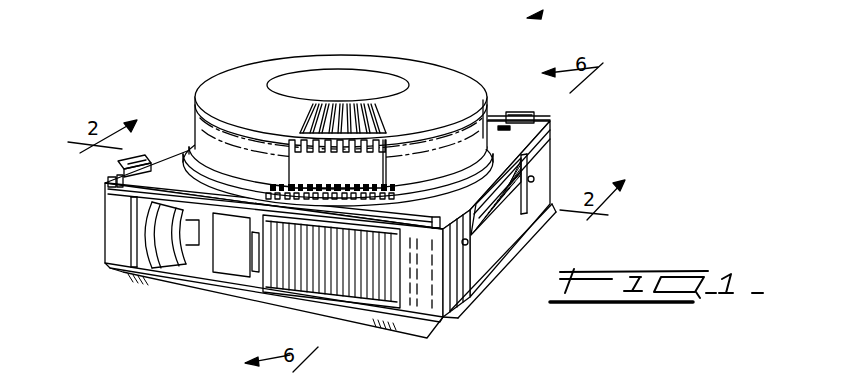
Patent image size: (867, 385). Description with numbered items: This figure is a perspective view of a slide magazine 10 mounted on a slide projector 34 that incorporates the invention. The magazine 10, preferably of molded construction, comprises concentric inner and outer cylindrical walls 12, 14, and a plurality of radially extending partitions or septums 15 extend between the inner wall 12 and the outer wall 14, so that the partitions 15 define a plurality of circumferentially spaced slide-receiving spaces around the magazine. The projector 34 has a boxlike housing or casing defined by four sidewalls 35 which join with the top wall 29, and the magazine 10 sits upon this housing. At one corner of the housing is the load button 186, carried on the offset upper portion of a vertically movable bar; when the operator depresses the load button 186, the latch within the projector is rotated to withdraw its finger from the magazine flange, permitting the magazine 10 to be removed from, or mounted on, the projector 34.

The slide magazine 10 is at (248, 78).
The inner cylindrical wall 12 is at (360, 96).
The outer cylindrical wall 14 is at (487, 120).
The partition 15 is at (331, 103).
The top wall 29 is at (172, 163).
The slide projector 34 is at (102, 225).
The sidewall 35 is at (465, 290).
The load button 186 is at (530, 114).